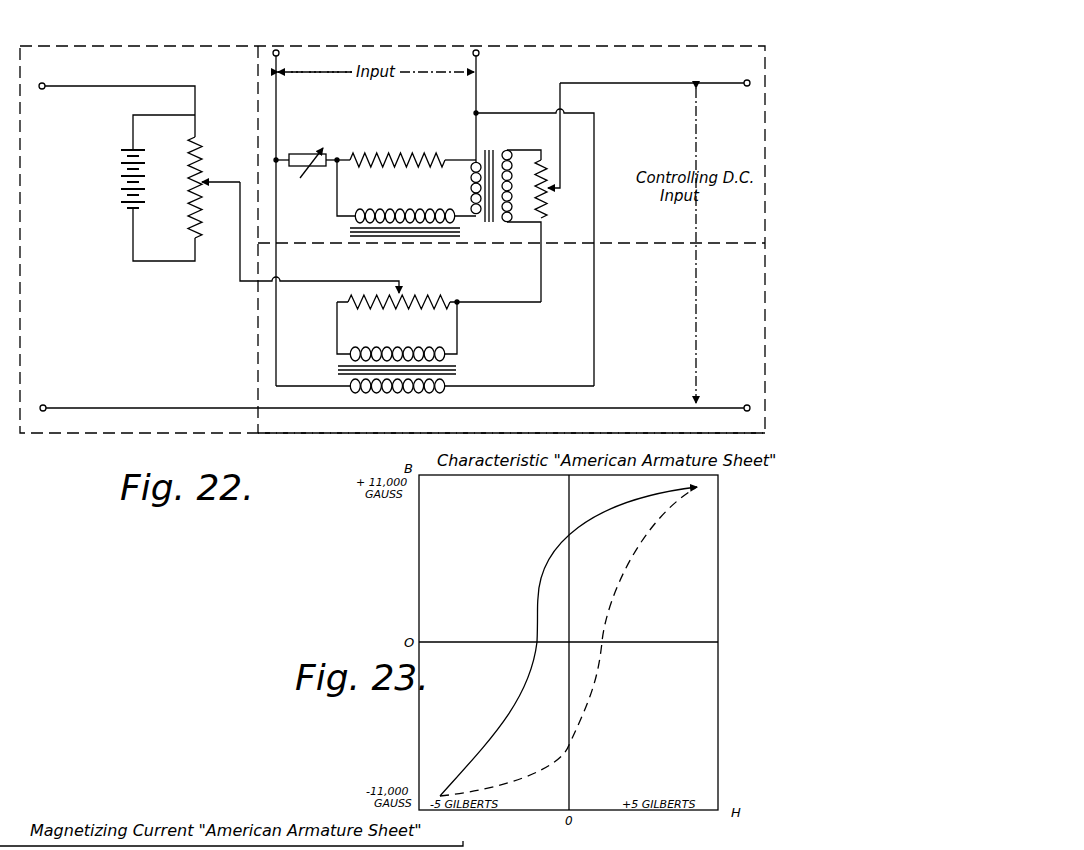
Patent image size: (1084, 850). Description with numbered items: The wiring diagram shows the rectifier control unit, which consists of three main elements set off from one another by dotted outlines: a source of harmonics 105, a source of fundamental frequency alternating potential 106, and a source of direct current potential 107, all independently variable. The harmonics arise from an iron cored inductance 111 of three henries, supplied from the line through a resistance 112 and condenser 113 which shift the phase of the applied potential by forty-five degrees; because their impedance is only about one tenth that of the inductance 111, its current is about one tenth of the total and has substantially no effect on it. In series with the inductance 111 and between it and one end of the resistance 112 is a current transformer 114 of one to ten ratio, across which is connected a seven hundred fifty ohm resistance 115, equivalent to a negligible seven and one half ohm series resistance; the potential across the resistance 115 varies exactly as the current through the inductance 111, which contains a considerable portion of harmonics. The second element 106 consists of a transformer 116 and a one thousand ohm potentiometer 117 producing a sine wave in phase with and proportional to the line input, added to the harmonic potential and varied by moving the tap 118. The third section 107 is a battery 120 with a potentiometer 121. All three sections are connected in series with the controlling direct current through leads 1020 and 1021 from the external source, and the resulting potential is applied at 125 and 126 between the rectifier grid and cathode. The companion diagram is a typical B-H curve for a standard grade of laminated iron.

The source of harmonics 105 is at (329, 47).
The source of fundamental frequency alternating potential 106 is at (322, 433).
The source of direct current potential 107 is at (232, 47).
The iron cored inductance 111 is at (428, 212).
The resistance 112 is at (416, 151).
The condenser 113 is at (298, 150).
The current transformer 114 is at (494, 152).
The resistance 115 is at (548, 203).
The transformer 116 is at (458, 372).
The potentiometer 117 is at (397, 338).
The tap 118 is at (404, 290).
The battery 120 is at (119, 170).
The potentiometer 121 is at (200, 229).
The grid connection 125 is at (48, 84).
The cathode connection 126 is at (47, 410).
The lead 1020 is at (744, 81).
The lead 1021 is at (744, 410).